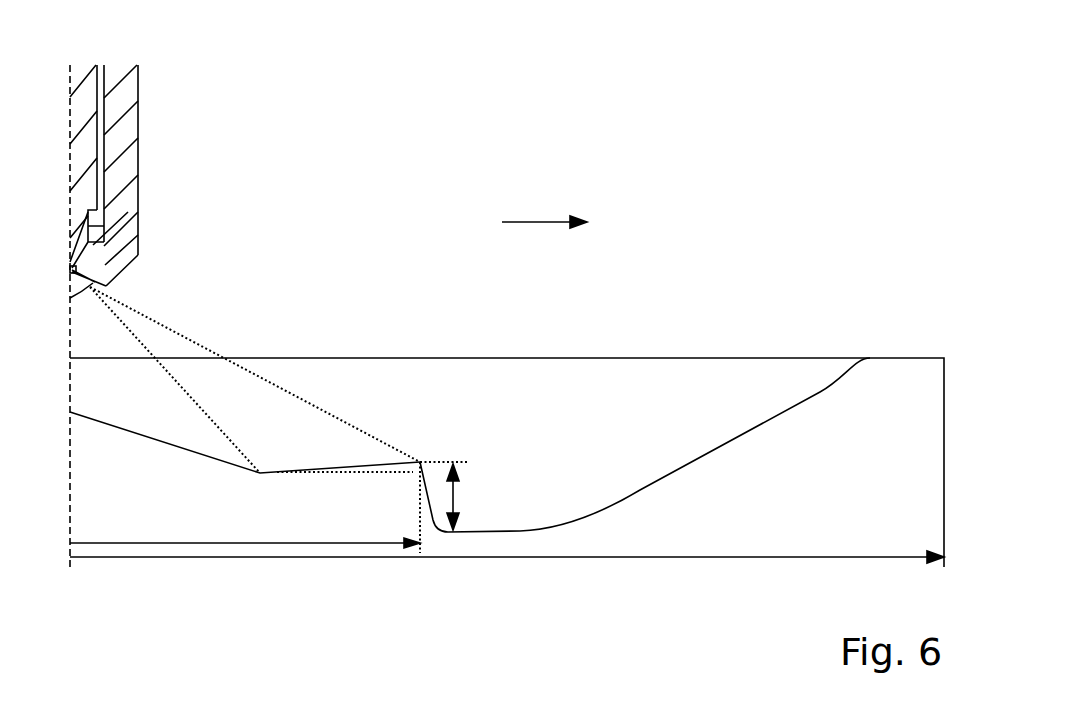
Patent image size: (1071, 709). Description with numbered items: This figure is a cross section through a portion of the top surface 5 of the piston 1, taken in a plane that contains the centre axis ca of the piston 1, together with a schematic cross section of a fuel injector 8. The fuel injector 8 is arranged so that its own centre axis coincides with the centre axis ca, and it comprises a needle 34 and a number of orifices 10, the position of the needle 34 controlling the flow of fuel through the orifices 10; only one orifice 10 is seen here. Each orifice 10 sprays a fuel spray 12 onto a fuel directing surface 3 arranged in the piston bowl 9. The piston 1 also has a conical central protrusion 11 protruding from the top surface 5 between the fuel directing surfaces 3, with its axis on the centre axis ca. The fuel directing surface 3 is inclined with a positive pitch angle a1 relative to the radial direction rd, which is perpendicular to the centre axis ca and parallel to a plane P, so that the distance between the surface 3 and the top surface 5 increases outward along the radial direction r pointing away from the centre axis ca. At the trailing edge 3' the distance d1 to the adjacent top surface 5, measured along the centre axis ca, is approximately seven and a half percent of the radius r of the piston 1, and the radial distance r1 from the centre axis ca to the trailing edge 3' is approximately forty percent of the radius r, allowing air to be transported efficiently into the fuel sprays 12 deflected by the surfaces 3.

The piston 1 is at (900, 382).
The fuel directing surface 3 is at (345, 393).
The trailing edge 3' is at (451, 433).
The top surface 5 is at (528, 530).
The fuel injector 8 is at (128, 137).
The piston bowl 9 is at (615, 420).
The orifice 10 is at (104, 288).
The central protrusion 11 is at (127, 440).
The fuel spray 12 is at (205, 343).
The needle 34 is at (77, 243).
The radial direction rd is at (540, 222).
The radial distance r1 is at (244, 543).
The radius r is at (777, 557).
The distance d1 is at (453, 493).
The positive pitch angle a1 is at (342, 471).
The plane P is at (390, 470).
The centre axis ca is at (70, 503).